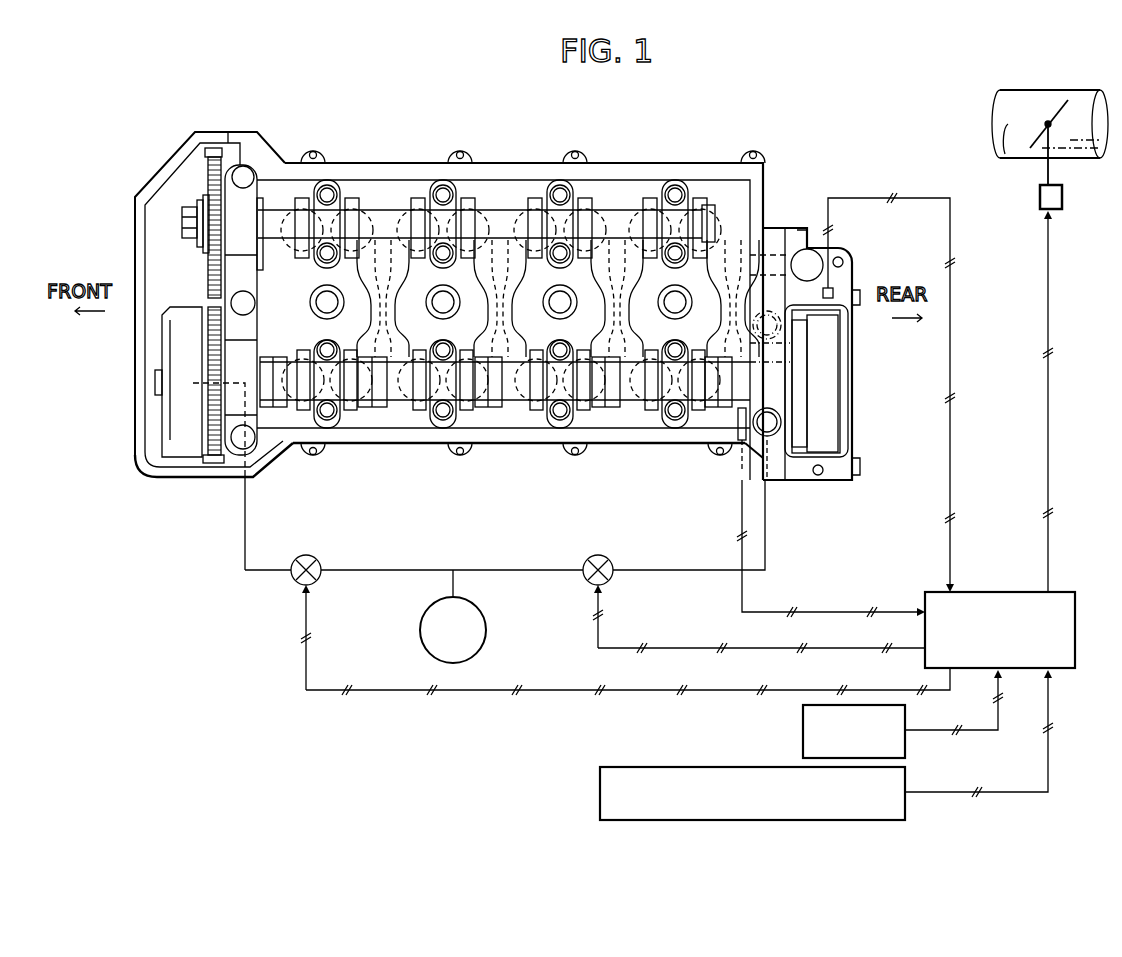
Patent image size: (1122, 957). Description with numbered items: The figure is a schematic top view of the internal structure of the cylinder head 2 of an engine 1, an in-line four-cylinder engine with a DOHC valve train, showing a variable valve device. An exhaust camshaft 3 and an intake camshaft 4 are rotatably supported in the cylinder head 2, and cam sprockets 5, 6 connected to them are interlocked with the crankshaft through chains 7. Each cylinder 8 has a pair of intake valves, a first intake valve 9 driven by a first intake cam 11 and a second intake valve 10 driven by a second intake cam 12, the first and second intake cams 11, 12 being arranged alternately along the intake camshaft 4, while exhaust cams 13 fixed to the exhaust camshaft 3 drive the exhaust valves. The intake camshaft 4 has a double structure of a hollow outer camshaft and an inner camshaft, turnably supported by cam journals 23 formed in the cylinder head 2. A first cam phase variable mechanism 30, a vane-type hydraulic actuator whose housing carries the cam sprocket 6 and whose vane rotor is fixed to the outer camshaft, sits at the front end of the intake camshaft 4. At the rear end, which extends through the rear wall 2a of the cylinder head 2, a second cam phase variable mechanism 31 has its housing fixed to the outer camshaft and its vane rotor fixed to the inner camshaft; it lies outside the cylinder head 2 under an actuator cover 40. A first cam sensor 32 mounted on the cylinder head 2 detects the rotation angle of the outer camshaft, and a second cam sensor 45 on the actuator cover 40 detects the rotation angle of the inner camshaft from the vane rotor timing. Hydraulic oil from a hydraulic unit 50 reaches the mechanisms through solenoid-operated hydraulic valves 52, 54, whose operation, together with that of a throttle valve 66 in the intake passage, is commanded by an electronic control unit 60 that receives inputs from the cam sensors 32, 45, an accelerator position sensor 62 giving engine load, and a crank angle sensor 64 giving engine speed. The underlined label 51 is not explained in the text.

The engine 1 is at (477, 78).
The cylinder head 2 is at (668, 162).
The rear wall 2a is at (770, 500).
The exhaust camshaft 3 is at (383, 208).
The intake camshaft 4 is at (616, 440).
The cam sprocket 5 is at (215, 178).
The cam sprocket 6 is at (243, 472).
The chain 7 is at (214, 147).
The cylinder 8 is at (630, 268).
The first intake valve 9 is at (457, 462).
The second intake valve 10 is at (539, 458).
The first intake cam 11 is at (475, 478).
The second intake cam 12 is at (521, 481).
The exhaust cam 13 is at (705, 200).
The cam journal 23 is at (772, 395).
The first cam phase variable mechanism 30 is at (185, 465).
The second cam phase variable mechanism 31 is at (838, 420).
The first cam sensor 32 is at (740, 447).
The actuator cover 40 is at (853, 262).
The second cam sensor 45 is at (835, 300).
The hydraulic unit 50 is at (422, 615).
The timing chain 51 is at (730, 206).
The solenoid-operated hydraulic valve 52 is at (294, 582).
The solenoid-operated hydraulic valve 54 is at (586, 582).
The electronic control unit 60 is at (1076, 605).
The accelerator position sensor 62 is at (803, 720).
The crank angle sensor 64 is at (600, 782).
The throttle valve 66 is at (1055, 102).